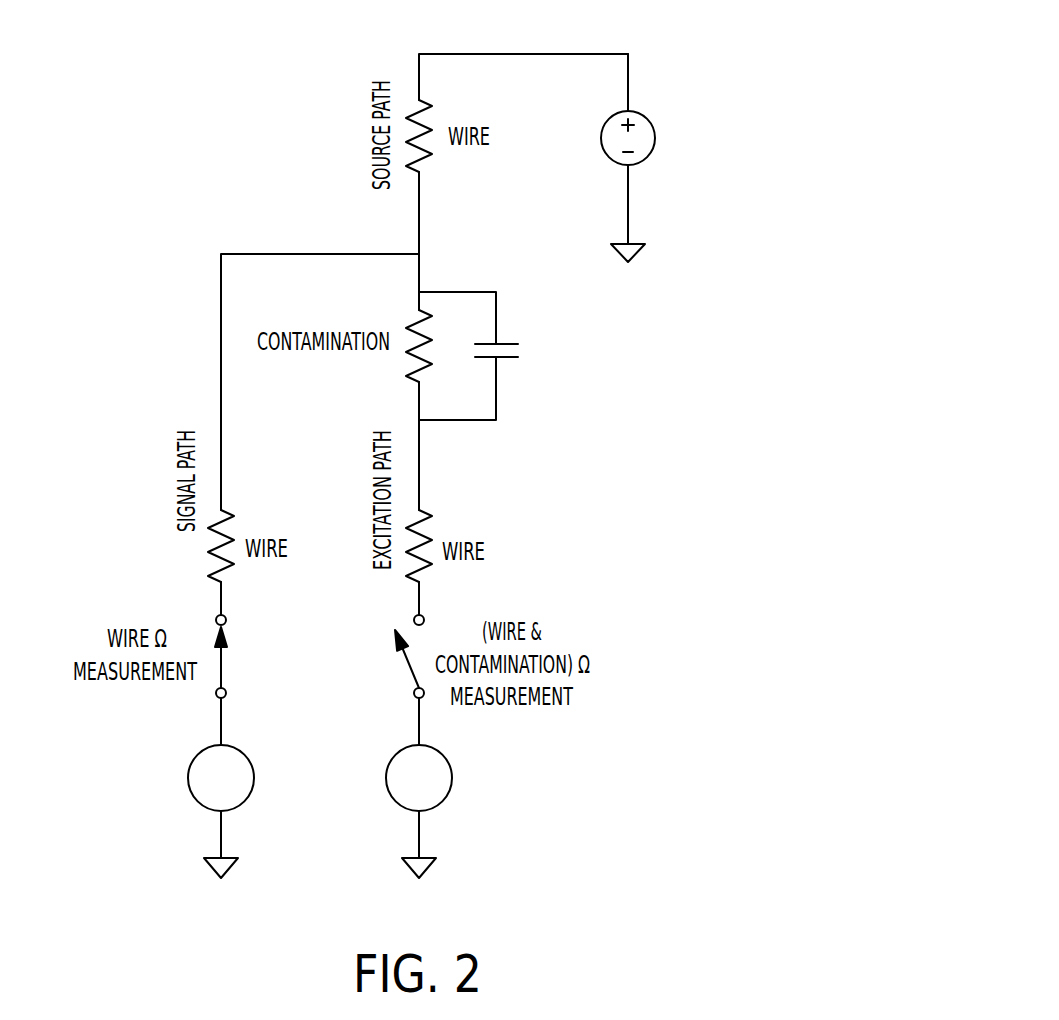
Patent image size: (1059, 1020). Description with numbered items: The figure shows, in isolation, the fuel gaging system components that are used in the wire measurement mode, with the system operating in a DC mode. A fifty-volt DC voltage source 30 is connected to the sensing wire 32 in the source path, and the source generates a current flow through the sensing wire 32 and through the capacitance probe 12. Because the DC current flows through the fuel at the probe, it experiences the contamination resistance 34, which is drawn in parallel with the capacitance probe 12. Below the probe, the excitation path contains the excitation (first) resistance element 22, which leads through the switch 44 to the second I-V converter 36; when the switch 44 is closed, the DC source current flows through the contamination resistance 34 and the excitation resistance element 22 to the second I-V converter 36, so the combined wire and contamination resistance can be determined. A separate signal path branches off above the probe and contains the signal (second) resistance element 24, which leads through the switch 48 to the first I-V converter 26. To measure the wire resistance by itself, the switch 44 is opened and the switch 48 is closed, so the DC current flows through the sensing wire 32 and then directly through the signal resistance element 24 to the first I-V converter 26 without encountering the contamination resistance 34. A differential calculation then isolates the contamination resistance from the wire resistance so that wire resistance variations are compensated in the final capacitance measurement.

The capacitance probe 12 is at (592, 352).
The excitation resistance element 22 is at (410, 580).
The signal resistance element 24 is at (207, 570).
The first I-V converter 26 is at (188, 778).
The DC voltage source 30 is at (655, 138).
The sensing wire 32 is at (407, 114).
The contamination resistance 34 is at (418, 315).
The second I-V converter 36 is at (452, 778).
The switch 44 is at (407, 650).
The switch 48 is at (222, 670).